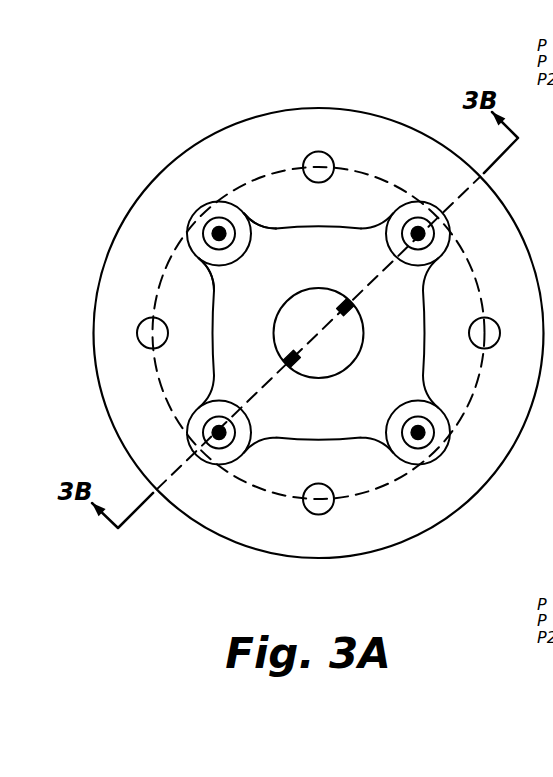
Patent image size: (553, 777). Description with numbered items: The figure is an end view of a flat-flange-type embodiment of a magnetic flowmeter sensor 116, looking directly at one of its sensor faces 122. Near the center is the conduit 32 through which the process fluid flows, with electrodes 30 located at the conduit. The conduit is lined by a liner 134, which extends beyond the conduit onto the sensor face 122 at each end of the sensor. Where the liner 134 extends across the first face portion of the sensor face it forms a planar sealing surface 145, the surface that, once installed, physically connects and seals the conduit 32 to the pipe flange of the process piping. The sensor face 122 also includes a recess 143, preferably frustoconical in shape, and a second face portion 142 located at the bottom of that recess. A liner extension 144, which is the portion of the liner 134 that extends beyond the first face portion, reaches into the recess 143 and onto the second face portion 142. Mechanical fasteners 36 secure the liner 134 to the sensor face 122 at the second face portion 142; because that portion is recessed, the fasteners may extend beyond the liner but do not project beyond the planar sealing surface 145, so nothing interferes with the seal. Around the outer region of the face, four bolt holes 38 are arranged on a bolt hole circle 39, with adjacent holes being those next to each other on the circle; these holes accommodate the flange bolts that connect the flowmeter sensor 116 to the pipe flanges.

The electrodes 30 is at (276, 308).
The conduit 32 is at (320, 361).
The mechanical fasteners 36 is at (217, 230).
The bolt holes 38 is at (318, 152).
The bolt hole circle 39 is at (263, 493).
The magnetic flowmeter sensor 116 is at (386, 114).
The sensor face 122 is at (366, 458).
The liner 134 is at (212, 347).
The second face portion 142 is at (240, 212).
The recess 143 is at (236, 216).
The liner extension 144 is at (183, 258).
The planar sealing surface 145 is at (268, 257).